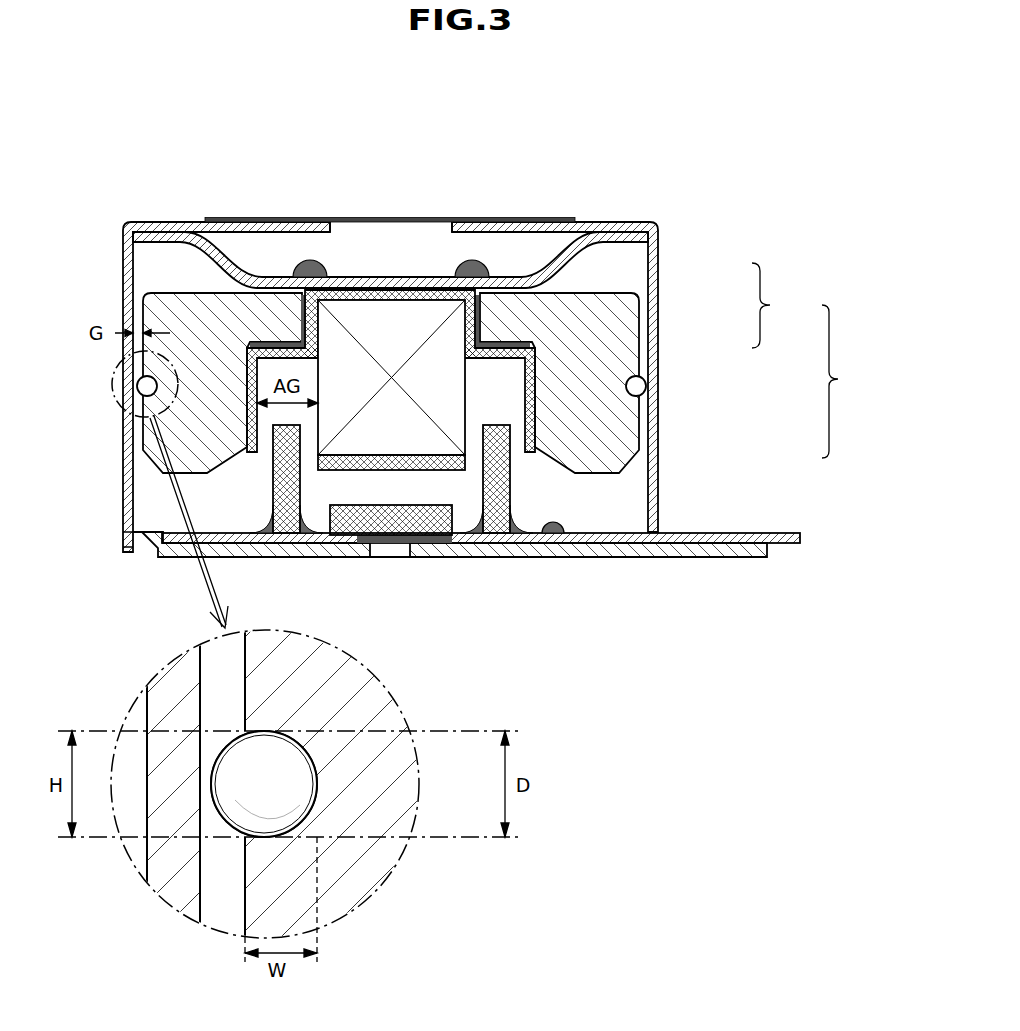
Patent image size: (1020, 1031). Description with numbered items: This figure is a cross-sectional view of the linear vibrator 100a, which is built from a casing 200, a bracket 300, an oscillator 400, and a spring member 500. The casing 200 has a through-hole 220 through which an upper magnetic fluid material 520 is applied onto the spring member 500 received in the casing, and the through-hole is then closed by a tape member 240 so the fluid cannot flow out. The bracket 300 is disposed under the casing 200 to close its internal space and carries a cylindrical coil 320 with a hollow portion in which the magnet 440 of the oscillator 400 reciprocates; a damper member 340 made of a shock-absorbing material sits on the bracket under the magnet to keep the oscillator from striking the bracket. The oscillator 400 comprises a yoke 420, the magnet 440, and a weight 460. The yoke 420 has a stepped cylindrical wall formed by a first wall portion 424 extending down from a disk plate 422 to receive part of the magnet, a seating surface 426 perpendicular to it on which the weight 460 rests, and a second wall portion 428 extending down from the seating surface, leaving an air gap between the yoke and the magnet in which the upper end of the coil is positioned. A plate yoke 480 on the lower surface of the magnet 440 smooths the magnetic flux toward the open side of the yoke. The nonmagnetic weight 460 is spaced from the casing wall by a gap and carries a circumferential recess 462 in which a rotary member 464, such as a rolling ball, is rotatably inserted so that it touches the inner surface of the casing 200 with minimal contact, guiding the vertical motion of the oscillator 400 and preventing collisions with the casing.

The linear vibrator 100a is at (173, 105).
The casing 200 is at (620, 229).
The through-hole 220 is at (358, 228).
The tape member 240 is at (428, 218).
The bracket 300 is at (547, 550).
The coil 320 is at (287, 518).
The damper member 340 is at (364, 523).
The oscillator 400 is at (852, 381).
The yoke 420 is at (530, 353).
The disk plate 422 is at (452, 295).
The first wall portion 424 is at (472, 330).
The seating surface 426 is at (510, 360).
The second wall portion 428 is at (532, 382).
The magnet 440 is at (468, 403).
The weight 460 is at (613, 452).
The circumferential recess 462 is at (637, 392).
The rotary member 464 is at (641, 381).
The plate yoke 480 is at (430, 467).
The spring member 500 is at (207, 264).
The upper magnetic fluid material 520 is at (310, 266).